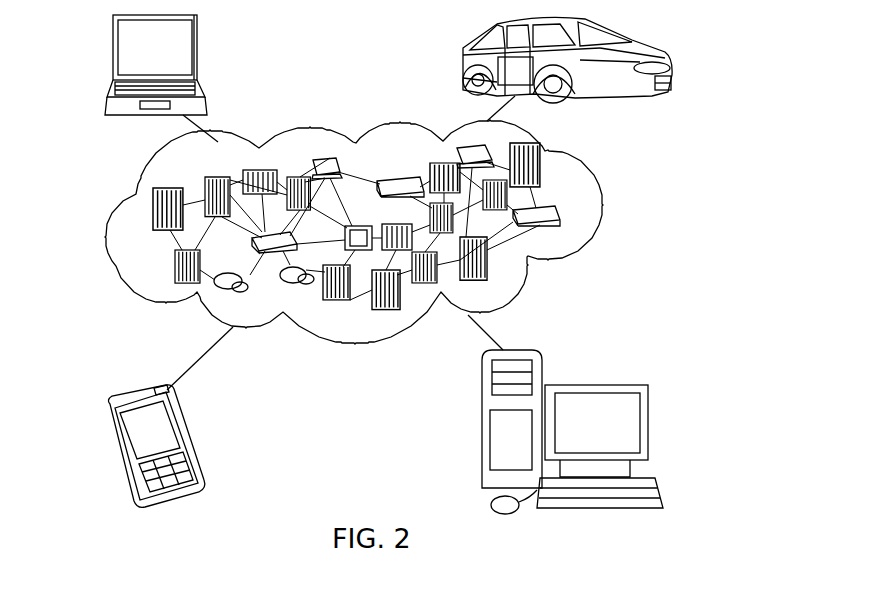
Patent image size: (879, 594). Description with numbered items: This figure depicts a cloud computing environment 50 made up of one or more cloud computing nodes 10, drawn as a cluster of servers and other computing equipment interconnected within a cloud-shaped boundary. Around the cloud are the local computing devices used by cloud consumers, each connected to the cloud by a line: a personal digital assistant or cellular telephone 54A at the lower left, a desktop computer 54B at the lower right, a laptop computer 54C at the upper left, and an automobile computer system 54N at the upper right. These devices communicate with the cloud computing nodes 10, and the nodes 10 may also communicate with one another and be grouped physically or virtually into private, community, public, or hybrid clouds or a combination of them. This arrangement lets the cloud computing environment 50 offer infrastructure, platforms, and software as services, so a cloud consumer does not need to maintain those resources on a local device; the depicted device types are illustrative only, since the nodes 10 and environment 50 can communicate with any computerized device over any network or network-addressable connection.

The cloud computing node 10 is at (563, 235).
The cloud computing environment 50 is at (600, 217).
The personal digital assistant or cellular telephone 54A is at (196, 444).
The desktop computer 54B is at (590, 385).
The laptop computer 54C is at (198, 58).
The automobile computer system 54N is at (465, 68).